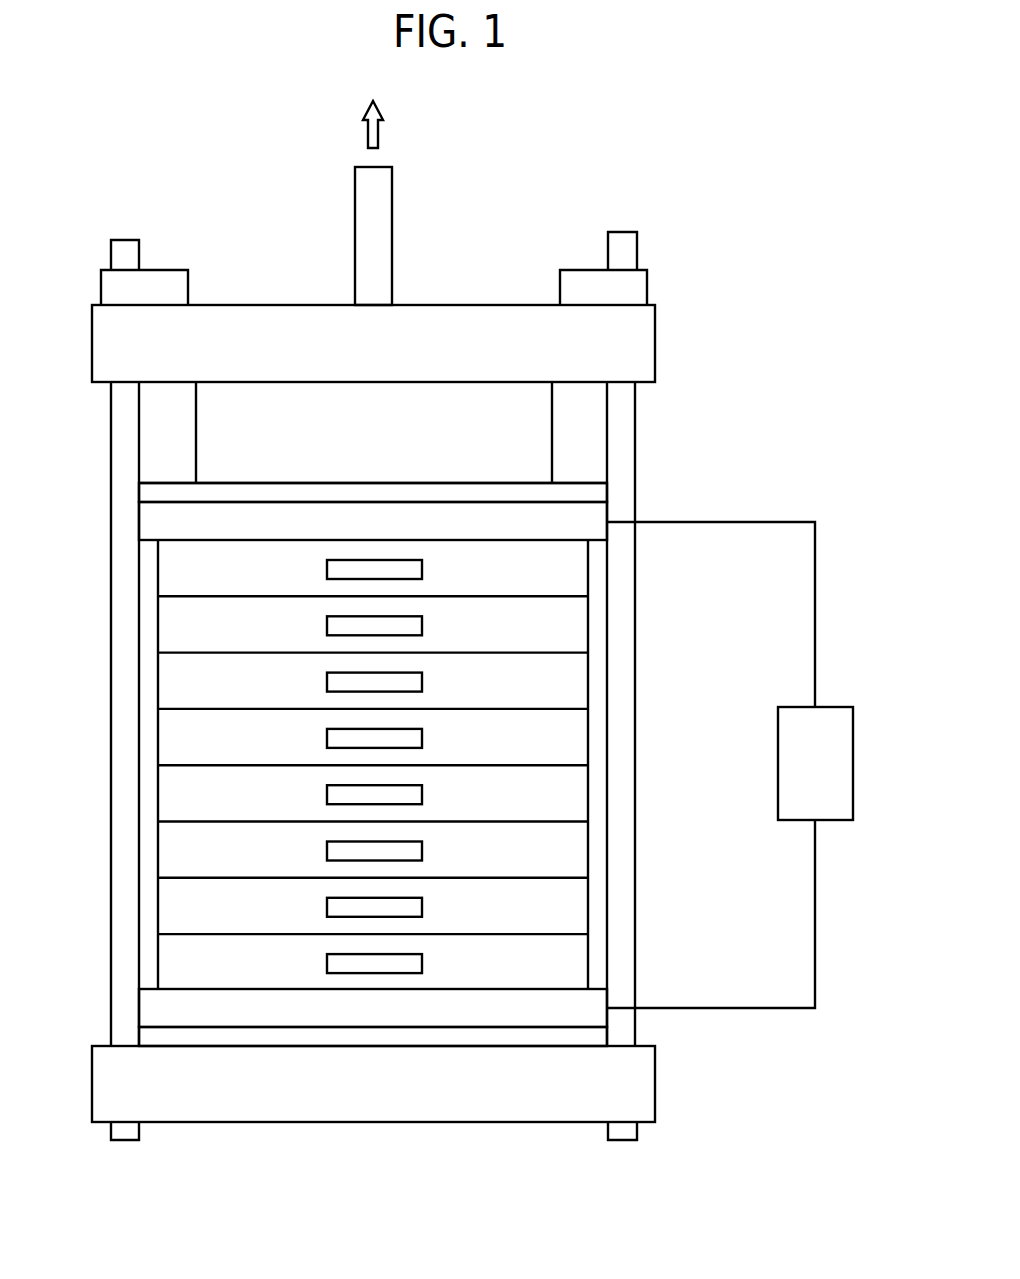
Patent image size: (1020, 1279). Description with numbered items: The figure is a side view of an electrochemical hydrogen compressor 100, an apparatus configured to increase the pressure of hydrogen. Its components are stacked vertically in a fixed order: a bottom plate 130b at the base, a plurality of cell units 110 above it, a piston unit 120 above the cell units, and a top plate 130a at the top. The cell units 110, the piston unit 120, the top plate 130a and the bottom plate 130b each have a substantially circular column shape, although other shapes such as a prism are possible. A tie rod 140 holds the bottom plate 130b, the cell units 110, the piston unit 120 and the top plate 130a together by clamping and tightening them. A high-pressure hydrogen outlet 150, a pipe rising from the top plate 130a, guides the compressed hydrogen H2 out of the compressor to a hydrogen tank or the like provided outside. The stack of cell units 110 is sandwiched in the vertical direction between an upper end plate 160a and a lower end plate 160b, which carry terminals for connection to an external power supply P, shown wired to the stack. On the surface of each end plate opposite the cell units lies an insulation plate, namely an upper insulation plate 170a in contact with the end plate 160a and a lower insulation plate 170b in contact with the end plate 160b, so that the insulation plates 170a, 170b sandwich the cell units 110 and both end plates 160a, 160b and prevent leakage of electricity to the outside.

The electrochemical hydrogen compressor 100 is at (122, 189).
The cell unit 110 is at (570, 570).
The piston unit 120 is at (522, 458).
The top plate 130a is at (642, 343).
The bottom plate 130b is at (640, 1083).
The tie rod 140 is at (623, 420).
The high-pressure hydrogen outlet 150 is at (378, 237).
The end plate 160a is at (147, 522).
The end plate 160b is at (147, 1005).
The insulation plate 170a is at (147, 492).
The insulation plate 170b is at (147, 1033).
The external power supply P is at (837, 762).
The hydrogen gas H2 is at (380, 137).